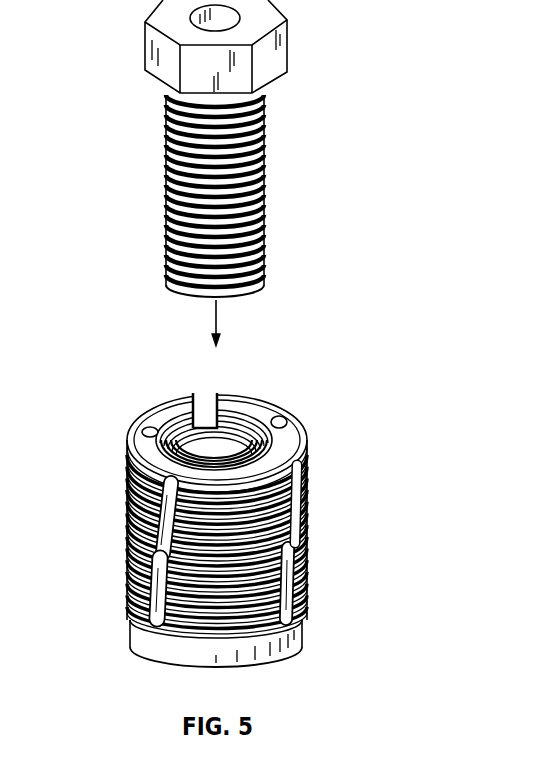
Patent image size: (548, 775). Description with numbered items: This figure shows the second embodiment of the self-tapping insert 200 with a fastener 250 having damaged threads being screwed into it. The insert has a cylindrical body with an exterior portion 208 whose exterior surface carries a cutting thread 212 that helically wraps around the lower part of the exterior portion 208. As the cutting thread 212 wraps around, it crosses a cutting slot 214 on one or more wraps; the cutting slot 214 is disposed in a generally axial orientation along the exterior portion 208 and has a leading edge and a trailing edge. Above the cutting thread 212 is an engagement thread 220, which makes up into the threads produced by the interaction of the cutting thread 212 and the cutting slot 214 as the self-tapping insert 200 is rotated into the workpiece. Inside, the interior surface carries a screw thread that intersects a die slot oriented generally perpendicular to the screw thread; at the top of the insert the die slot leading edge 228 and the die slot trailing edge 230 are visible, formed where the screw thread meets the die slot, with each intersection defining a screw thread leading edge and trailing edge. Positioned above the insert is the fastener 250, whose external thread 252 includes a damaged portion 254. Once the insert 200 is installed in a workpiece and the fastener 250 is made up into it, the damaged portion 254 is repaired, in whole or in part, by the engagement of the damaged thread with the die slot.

The self-tapping insert 200 is at (219, 496).
The exterior portion 208 is at (219, 480).
The cutting thread 212 is at (303, 603).
The cutting slot 214 is at (158, 584).
The engagement thread 220 is at (127, 484).
The die slot leading edge 228 is at (219, 398).
The die slot trailing edge 230 is at (196, 402).
The fastener 250 is at (254, 148).
The external thread 252 is at (249, 196).
The damaged portion 254 is at (218, 188).